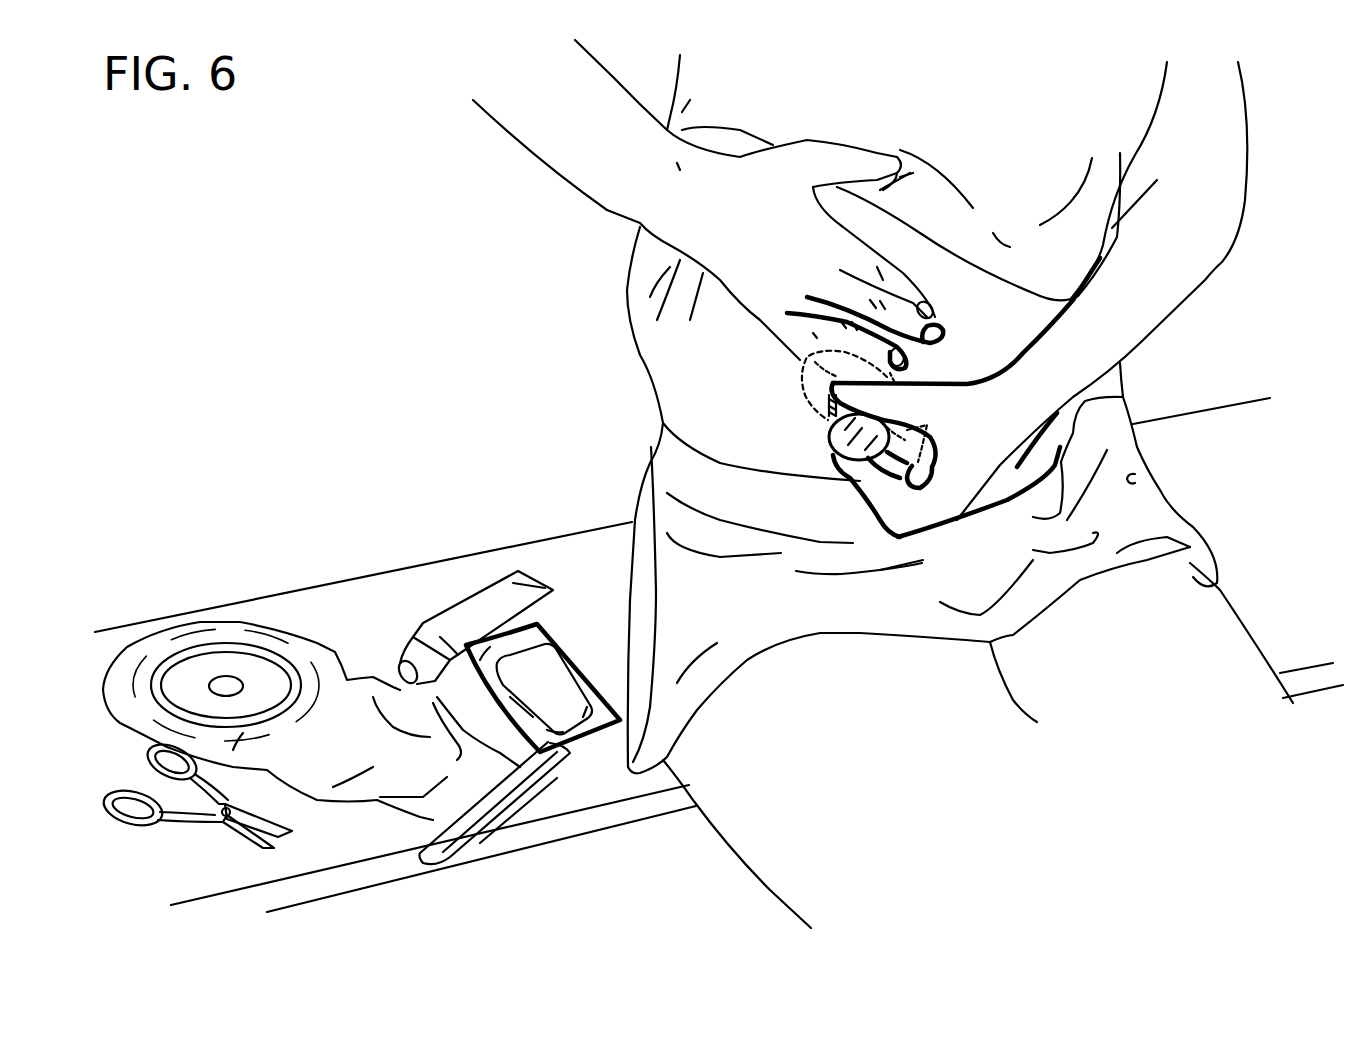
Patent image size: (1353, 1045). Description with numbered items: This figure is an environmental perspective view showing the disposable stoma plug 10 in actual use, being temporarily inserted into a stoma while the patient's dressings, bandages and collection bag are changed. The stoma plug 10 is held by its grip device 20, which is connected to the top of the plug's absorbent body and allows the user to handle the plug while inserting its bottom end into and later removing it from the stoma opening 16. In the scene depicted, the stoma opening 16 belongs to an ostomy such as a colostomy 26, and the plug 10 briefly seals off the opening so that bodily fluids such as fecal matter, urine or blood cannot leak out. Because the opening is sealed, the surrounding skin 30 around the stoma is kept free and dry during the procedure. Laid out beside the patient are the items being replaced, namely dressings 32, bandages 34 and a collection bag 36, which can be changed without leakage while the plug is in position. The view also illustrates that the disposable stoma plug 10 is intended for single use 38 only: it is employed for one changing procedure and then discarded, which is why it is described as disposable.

The disposable stoma plug 10 is at (793, 432).
The stoma opening 16 is at (794, 406).
The grip device 20 is at (833, 430).
The colostomy 26 is at (773, 387).
The surrounding skin 30 is at (778, 368).
The dressings 32 is at (472, 610).
The bandages 34 is at (550, 633).
The collection bag 36 is at (329, 668).
The single use 38 is at (524, 260).